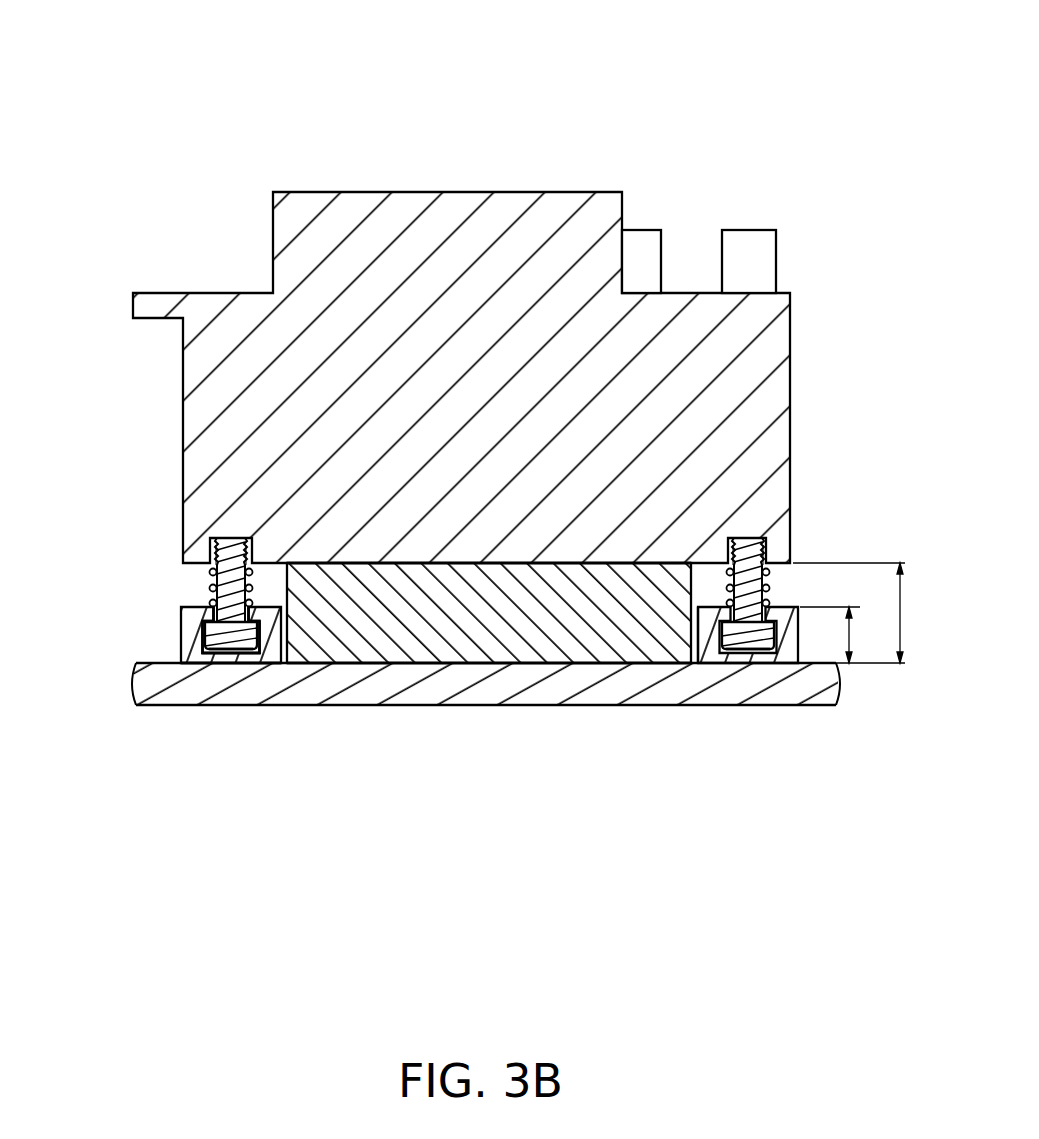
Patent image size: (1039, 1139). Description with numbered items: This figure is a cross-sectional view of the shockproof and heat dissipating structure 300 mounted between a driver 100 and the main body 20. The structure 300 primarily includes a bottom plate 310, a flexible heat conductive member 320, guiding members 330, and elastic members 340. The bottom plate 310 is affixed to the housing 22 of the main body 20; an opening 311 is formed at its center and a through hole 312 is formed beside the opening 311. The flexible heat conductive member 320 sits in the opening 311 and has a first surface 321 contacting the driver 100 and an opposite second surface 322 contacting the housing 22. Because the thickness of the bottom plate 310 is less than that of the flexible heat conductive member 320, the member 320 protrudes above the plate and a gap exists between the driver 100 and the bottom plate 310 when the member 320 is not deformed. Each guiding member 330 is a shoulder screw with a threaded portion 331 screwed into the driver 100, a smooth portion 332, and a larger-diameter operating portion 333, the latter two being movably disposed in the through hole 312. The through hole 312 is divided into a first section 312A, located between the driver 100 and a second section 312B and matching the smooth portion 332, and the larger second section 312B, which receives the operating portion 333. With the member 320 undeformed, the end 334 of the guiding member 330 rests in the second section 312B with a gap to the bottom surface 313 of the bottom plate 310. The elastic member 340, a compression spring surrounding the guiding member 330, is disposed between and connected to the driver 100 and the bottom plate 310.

The main body 20 is at (787, 706).
The housing 22 is at (615, 688).
The driver 100 is at (807, 347).
The shockproof and heat dissipating structure 300 is at (868, 140).
The bottom plate 310 is at (707, 657).
The opening 311 is at (697, 663).
The through hole 312 is at (90, 585).
The first section 312A is at (208, 612).
The second section 312B is at (206, 642).
The bottom surface 313 is at (268, 663).
The flexible heat conductive member 320 is at (493, 630).
The first surface 321 is at (610, 563).
The second surface 322 is at (380, 663).
The guiding member 330 is at (246, 657).
The threaded portion 331 is at (222, 538).
The smooth portion 332 is at (226, 555).
The operating portion 333 is at (222, 640).
The end 334 is at (217, 663).
The elastic member 340 is at (213, 588).